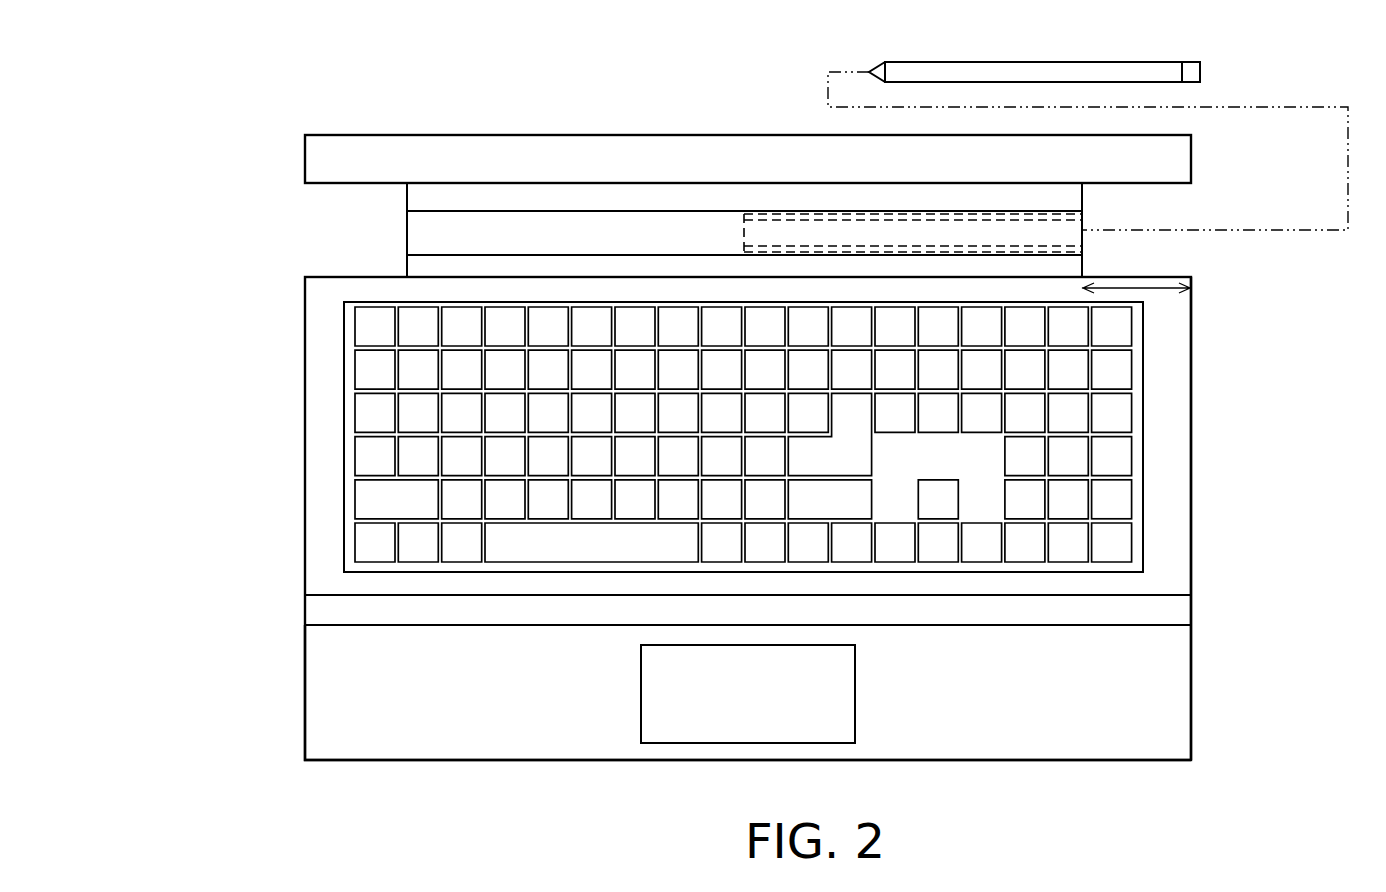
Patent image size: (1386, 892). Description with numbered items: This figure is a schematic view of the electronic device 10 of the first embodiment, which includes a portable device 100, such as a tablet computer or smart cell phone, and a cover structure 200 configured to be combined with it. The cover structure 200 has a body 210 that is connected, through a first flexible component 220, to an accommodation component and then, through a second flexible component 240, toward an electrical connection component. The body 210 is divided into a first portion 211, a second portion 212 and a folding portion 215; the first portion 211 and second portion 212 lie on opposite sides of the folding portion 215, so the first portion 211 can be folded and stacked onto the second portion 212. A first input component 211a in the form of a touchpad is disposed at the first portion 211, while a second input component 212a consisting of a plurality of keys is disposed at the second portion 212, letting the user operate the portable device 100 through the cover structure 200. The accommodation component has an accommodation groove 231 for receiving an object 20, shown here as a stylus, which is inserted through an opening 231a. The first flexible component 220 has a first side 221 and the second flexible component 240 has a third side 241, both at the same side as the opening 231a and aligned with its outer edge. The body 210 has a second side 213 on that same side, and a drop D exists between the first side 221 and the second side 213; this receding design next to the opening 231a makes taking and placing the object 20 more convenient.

The electronic device 10 is at (1310, 790).
The object 20 is at (1086, 70).
The portable device 100 is at (362, 142).
The cover structure 200 is at (734, 543).
The body 210 is at (750, 543).
The first portion 211 is at (824, 717).
The first input component 211a is at (789, 727).
The second portion 212 is at (848, 437).
The second input component 212a is at (1120, 500).
The second side 213 is at (1206, 388).
The folding portion 215 is at (313, 610).
The first flexible component 220 is at (788, 245).
The first side 221 is at (1096, 271).
The accommodation groove 231 is at (963, 164).
The opening 231a is at (1097, 233).
The second flexible component 240 is at (788, 194).
The third side 241 is at (1096, 202).
The drop D is at (1135, 290).